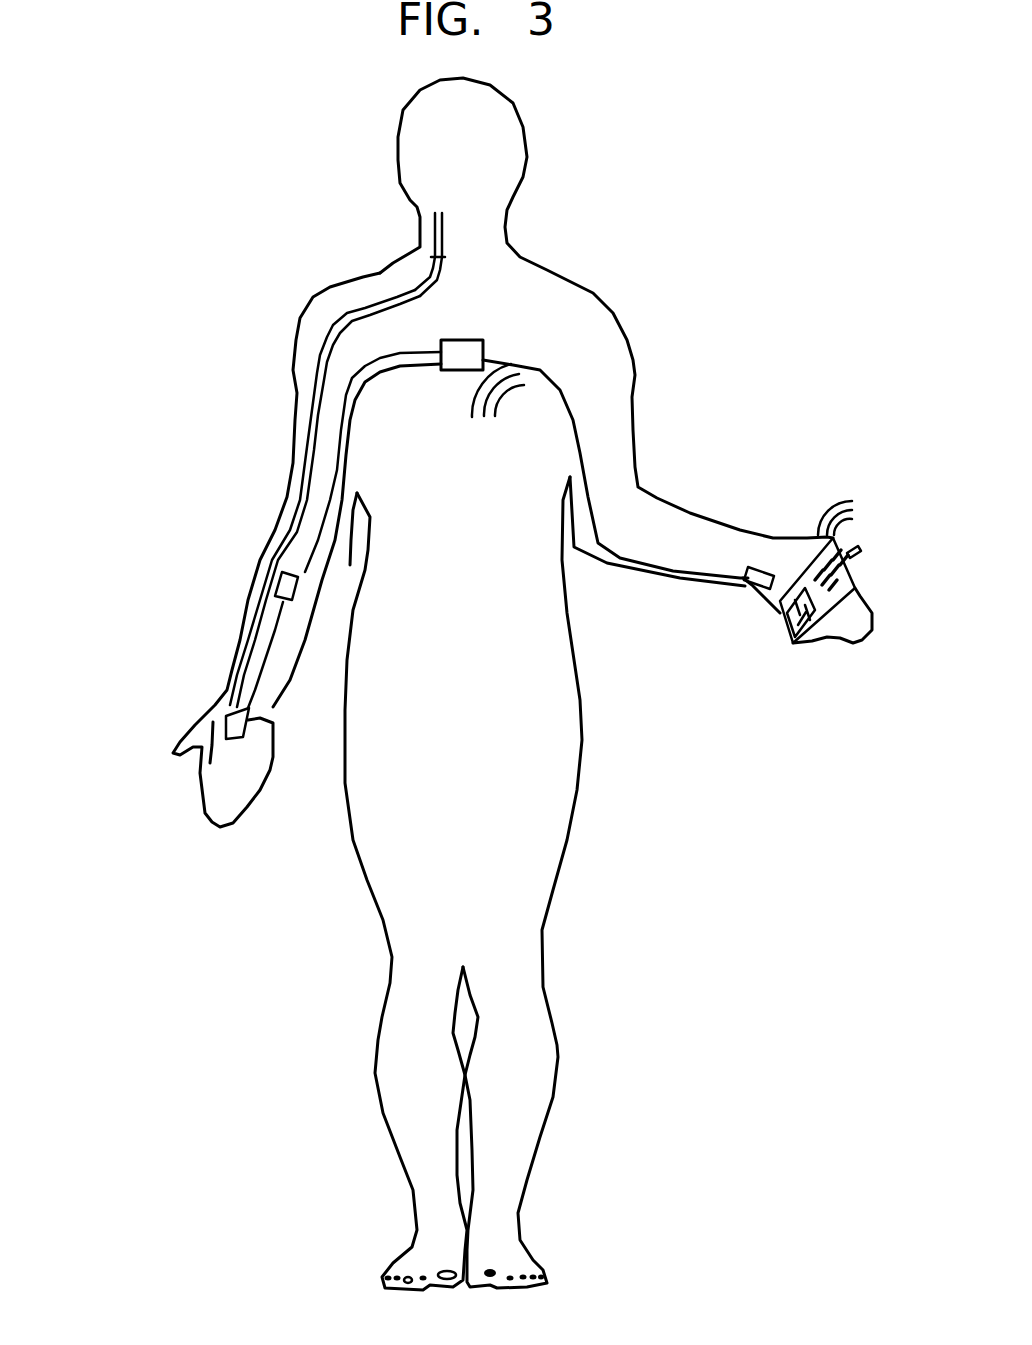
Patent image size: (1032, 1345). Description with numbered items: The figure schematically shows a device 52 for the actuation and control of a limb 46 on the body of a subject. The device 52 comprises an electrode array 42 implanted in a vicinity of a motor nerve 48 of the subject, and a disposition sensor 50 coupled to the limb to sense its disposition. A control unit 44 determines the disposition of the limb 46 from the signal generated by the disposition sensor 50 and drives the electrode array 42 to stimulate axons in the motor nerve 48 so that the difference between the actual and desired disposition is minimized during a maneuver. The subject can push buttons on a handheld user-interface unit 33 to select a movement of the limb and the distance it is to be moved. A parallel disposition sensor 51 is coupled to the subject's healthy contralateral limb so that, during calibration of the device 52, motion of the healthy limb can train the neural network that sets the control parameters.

The handheld user-interface unit 33 is at (808, 642).
The electrode array 42 is at (298, 585).
The control unit 44 is at (463, 348).
The limb 46 is at (272, 528).
The motor nerve 48 is at (245, 657).
The disposition sensor 50 is at (249, 722).
The parallel disposition sensor 51 is at (743, 590).
The device 52 is at (148, 400).